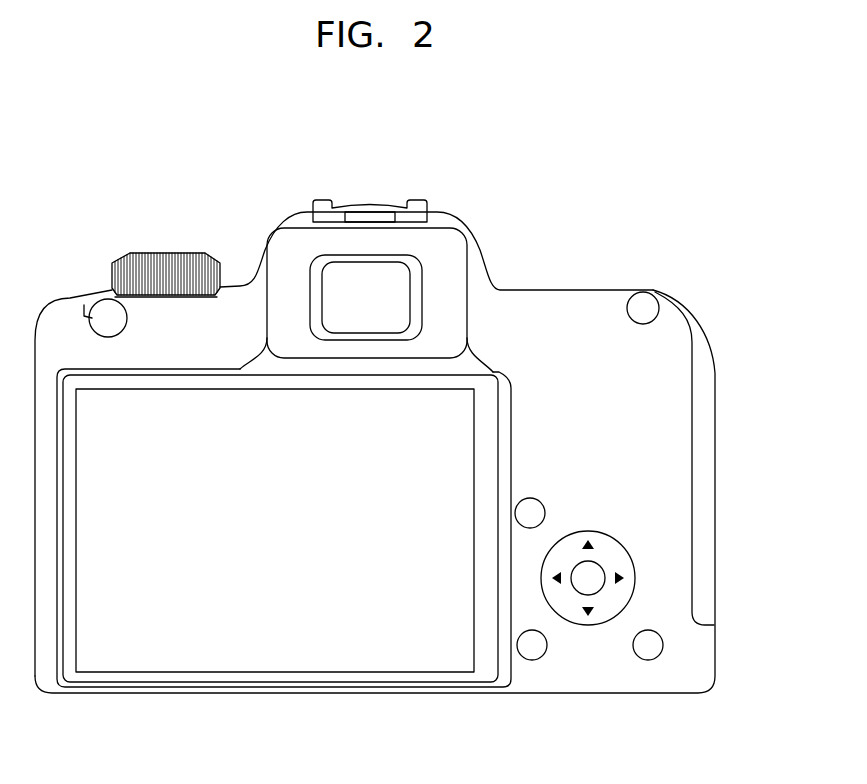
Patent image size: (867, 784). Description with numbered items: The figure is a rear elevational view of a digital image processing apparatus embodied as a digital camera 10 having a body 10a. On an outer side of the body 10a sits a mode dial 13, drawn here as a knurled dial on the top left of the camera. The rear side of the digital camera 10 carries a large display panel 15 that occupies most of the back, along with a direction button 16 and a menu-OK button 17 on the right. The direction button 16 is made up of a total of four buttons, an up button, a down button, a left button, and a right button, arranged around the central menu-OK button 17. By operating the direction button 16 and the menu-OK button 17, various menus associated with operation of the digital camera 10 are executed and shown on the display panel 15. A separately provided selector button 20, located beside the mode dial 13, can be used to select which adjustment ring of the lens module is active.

The digital camera 10 is at (596, 260).
The body 10a is at (708, 545).
The mode dial 13 is at (168, 252).
The display panel 15 is at (305, 657).
The direction button 16 is at (595, 640).
The menu-OK button 17 is at (587, 583).
The button 20 is at (102, 308).